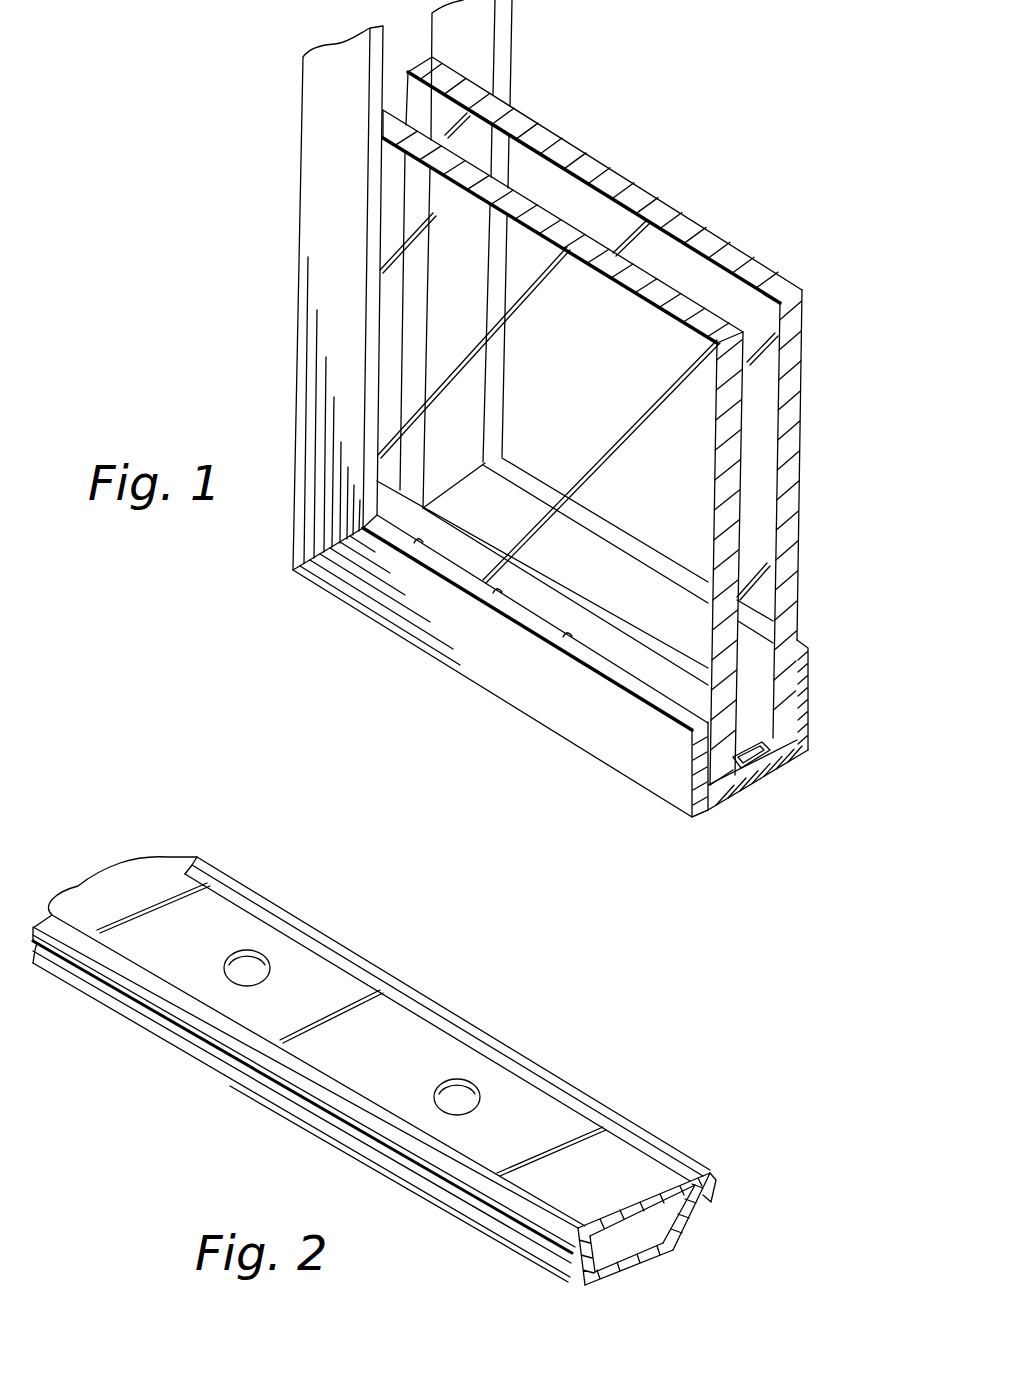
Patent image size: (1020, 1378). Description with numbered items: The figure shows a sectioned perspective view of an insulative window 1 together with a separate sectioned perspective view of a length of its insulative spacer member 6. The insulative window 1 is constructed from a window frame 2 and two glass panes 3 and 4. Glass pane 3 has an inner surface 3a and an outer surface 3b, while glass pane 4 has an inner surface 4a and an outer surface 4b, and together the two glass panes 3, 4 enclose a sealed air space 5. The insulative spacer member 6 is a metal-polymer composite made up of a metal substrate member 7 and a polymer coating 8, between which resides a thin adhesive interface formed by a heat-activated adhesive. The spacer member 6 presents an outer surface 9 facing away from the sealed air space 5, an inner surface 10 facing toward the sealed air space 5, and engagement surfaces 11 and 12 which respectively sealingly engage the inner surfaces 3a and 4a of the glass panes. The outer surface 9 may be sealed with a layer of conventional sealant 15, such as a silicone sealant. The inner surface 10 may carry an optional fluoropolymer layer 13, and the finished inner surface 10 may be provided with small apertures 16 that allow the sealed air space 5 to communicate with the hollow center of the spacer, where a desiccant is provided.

In FIG. 1, the insulative window 1 is at (648, 148).
In FIG. 1, the window frame 2 is at (325, 214).
In FIG. 1, the glass pane 3 is at (808, 371).
In FIG. 1, the inner surface 3a is at (758, 422).
In FIG. 1, the outer surface 3b is at (806, 311).
In FIG. 1, the glass pane 4 is at (746, 520).
In FIG. 1, the inner surface 4a is at (742, 483).
In FIG. 1, the outer surface 4b is at (692, 547).
In FIG. 1, the sealed air space 5 is at (754, 661).
In FIG. 1, the insulative spacer member 6 is at (778, 738).
In FIG. 2, the insulative spacer member 6 is at (450, 972).
In FIG. 1, the metal substrate member 7 is at (762, 762).
In FIG. 2, the metal substrate member 7 is at (646, 1266).
In FIG. 2, the polymer coating 8 is at (698, 1228).
In FIG. 1, the outer surface 9 is at (754, 775).
In FIG. 2, the outer surface 9 is at (597, 1290).
In FIG. 1, the inner surface 10 is at (738, 752).
In FIG. 2, the inner surface 10 is at (150, 893).
In FIG. 1, the engagement surface 11 is at (750, 738).
In FIG. 2, the engagement surface 11 is at (272, 900).
In FIG. 1, the engagement surface 12 is at (712, 790).
In FIG. 2, the engagement surface 12 is at (248, 1078).
In FIG. 2, the fluoropolymer layer 13 is at (648, 1187).
In FIG. 1, the sealant 15 is at (742, 772).
In FIG. 2, the apertures 16 is at (474, 1086).